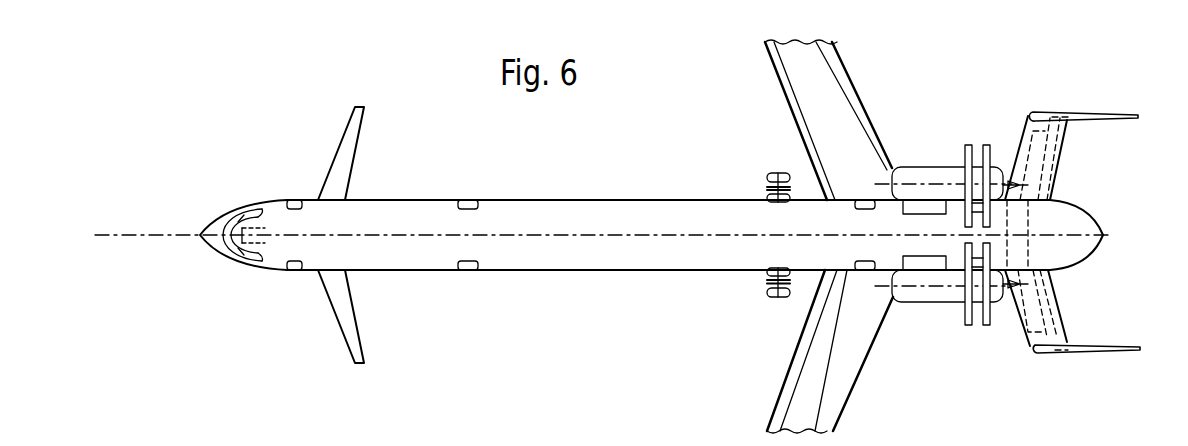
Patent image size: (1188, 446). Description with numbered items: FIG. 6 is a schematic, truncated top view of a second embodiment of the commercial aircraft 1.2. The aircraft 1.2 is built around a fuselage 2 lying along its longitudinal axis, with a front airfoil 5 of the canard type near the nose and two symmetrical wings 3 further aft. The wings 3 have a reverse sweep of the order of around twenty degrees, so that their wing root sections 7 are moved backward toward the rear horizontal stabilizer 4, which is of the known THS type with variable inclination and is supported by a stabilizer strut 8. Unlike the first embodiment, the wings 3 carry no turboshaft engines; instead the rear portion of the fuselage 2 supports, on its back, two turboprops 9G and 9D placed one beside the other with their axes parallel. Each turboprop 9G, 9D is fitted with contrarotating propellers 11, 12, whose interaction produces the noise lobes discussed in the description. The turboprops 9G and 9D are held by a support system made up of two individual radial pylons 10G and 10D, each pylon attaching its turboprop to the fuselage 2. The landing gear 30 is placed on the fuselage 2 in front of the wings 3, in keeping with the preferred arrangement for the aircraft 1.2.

The commercial aircraft 1.2 is at (662, 163).
The fuselage 2 is at (573, 255).
The wings 3 is at (820, 72).
The rear horizontal stabilizer 4 is at (1050, 163).
The front airfoil 5 is at (343, 164).
The wing root sections 7 is at (847, 197).
The stabilizer strut 8 is at (1020, 140).
The turboprop 9D is at (927, 184).
The turboprop 9G is at (933, 287).
The radial pylon 10D is at (910, 212).
The radial pylon 10G is at (907, 257).
The contrarotating propeller 11 is at (968, 145).
The contrarotating propeller 12 is at (986, 145).
The landing gear 30 is at (762, 165).